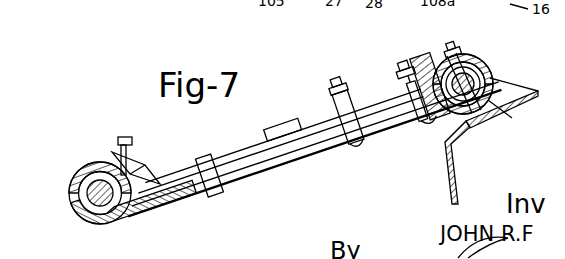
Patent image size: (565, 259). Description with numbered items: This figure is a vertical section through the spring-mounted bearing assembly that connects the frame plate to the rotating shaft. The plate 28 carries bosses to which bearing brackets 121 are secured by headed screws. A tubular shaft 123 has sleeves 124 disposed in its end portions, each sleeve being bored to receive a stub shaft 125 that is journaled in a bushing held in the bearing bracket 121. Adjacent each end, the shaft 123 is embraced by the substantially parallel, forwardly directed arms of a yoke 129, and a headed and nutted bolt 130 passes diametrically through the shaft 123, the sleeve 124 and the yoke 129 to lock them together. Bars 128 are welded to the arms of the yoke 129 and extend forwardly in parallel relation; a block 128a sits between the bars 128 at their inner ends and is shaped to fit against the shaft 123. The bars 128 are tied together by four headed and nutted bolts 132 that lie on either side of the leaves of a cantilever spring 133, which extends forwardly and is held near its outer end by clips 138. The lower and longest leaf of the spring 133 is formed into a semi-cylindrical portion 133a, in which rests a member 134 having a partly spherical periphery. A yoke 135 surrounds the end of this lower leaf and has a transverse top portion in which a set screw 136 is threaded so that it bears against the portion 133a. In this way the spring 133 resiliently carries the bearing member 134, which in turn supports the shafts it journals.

The plate 28 is at (457, 174).
The bearing bracket 121 is at (493, 94).
The shaft 123 is at (489, 67).
The sleeve 124 is at (490, 107).
The stub shaft 125 is at (480, 57).
The bar 128 is at (371, 92).
The block 128a is at (436, 124).
The yoke 129 is at (423, 58).
The headed and nutted bolt 130 is at (456, 46).
The headed and nutted bolt 132 is at (336, 83).
The cantilever spring 133 is at (287, 130).
The semi-cylindrical portion 133a is at (84, 172).
The member 134 is at (78, 190).
The yoke 135 is at (131, 225).
The set screw 136 is at (131, 141).
The clip 138 is at (213, 183).